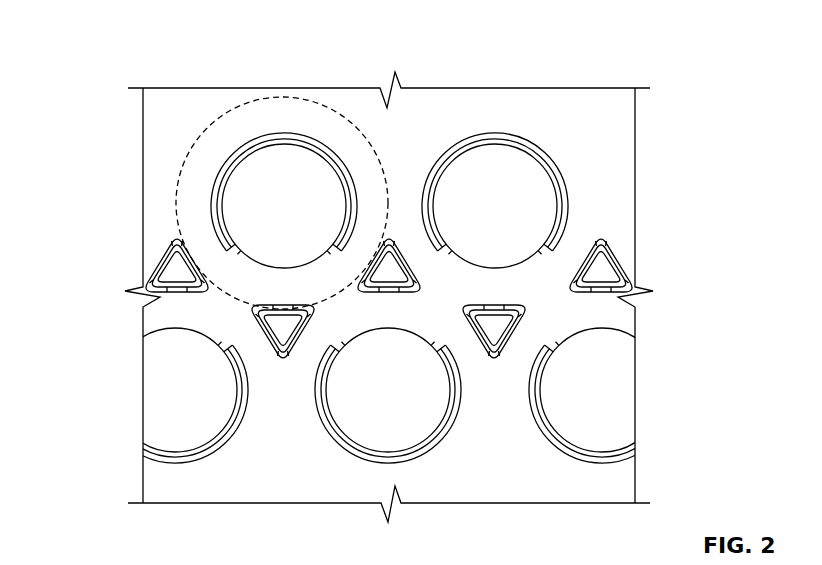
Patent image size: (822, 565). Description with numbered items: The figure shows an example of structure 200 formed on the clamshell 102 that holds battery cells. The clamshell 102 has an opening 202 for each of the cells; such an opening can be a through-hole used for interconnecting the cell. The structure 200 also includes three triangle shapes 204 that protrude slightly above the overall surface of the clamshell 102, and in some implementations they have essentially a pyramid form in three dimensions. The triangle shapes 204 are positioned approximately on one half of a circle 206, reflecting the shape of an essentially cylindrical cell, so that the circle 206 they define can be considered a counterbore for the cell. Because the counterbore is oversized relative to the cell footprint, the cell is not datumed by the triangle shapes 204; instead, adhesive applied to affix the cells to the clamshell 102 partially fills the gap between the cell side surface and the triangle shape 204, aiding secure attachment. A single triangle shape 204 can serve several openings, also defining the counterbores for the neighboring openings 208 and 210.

The structure 200 is at (88, 66).
The clamshell 102 is at (620, 150).
The opening 202 is at (288, 177).
The triangle shape 204 is at (283, 307).
The circle 206 is at (318, 102).
The opening 208 is at (174, 395).
The opening 210 is at (408, 420).